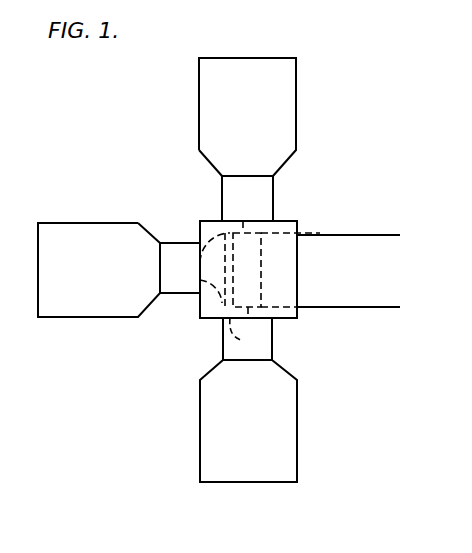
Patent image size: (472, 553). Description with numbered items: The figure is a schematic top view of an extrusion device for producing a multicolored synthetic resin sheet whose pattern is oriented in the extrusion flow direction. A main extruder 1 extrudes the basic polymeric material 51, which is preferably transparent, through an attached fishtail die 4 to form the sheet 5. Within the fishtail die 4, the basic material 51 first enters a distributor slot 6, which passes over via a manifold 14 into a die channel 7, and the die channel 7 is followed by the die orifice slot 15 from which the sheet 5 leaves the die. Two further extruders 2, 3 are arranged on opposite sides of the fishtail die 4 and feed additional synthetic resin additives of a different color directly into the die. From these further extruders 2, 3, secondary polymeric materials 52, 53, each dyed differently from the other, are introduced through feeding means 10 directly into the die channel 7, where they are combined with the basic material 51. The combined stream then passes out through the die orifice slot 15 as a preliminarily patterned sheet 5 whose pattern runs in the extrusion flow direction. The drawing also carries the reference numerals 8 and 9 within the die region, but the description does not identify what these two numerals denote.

The extruder 1 is at (60, 240).
The further extruder 2 is at (277, 428).
The further extruder 3 is at (276, 103).
The fishtail die 4 is at (279, 231).
The sheet 5 is at (372, 258).
The distributor slot 6 is at (213, 298).
The die channel 7 is at (240, 300).
The bore 8 is at (239, 338).
The bore 9 is at (272, 221).
The feeding means 10 is at (246, 293).
The manifold 14 is at (228, 294).
The die orifice slot 15 is at (306, 232).
The basic polymeric material 51 is at (212, 260).
The secondary polymeric material 52 is at (247, 320).
The secondary polymeric material 53 is at (248, 223).